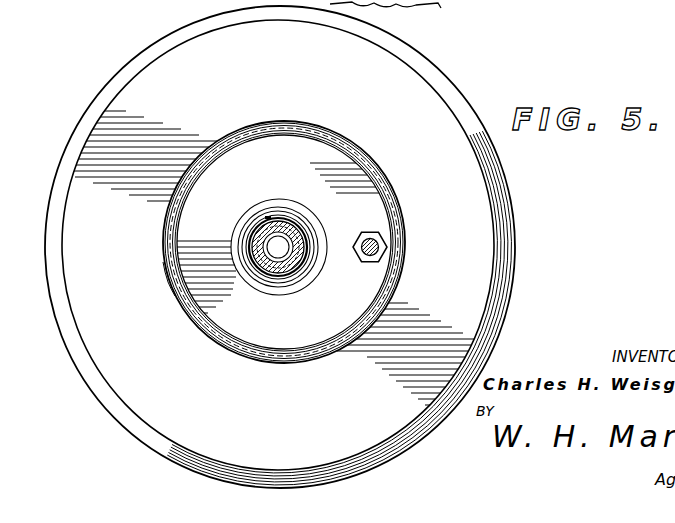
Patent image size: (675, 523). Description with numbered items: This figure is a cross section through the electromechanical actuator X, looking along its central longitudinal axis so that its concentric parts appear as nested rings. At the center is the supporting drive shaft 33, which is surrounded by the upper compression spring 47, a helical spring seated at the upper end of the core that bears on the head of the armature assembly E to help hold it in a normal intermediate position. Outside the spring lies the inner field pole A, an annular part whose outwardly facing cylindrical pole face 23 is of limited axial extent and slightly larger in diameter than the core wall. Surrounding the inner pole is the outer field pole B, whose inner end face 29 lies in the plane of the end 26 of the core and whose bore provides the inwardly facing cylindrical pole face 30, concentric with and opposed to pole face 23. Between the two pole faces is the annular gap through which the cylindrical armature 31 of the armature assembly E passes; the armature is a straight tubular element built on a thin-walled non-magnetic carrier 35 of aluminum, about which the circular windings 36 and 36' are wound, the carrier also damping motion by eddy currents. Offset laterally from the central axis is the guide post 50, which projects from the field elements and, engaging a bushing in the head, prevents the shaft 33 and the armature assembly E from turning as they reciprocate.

The inner end face 29 is at (458, 308).
The electromechanical actuator X is at (517, 268).
The armature assembly E is at (158, 212).
The cylindrical armature 31 is at (402, 218).
The outer field pole B is at (393, 182).
The carrier 35 is at (170, 237).
The pole face 23 is at (388, 288).
The circular winding 36 is at (135, 275).
The circular winding 36' is at (137, 288).
The inner field pole A is at (340, 182).
The end of the core 26 is at (272, 336).
The supporting drive shaft 33 is at (304, 235).
The upper compression spring 47 is at (298, 241).
The guide post 50 is at (356, 246).
The pole face 30 is at (388, 248).